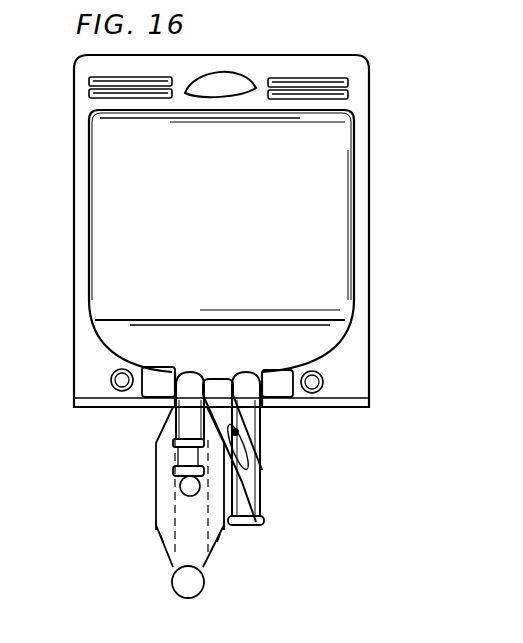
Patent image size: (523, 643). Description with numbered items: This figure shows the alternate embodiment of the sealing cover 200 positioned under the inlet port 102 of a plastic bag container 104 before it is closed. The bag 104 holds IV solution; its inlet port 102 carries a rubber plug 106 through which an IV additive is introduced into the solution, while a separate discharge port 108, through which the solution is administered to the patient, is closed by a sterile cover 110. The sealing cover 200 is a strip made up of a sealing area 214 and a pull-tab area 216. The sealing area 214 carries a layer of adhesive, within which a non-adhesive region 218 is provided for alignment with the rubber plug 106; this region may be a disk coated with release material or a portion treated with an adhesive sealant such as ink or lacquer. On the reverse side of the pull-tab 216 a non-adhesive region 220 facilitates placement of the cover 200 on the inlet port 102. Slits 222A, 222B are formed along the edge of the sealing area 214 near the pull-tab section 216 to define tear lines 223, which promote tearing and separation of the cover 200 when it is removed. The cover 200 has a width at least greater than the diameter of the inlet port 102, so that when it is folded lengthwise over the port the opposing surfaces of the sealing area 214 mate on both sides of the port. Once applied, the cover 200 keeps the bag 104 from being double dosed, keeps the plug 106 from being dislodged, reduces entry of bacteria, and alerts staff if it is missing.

The plastic bag container 104 is at (375, 161).
The inlet port 102 is at (169, 411).
The discharge port 108 is at (262, 413).
The rubber plug 106 is at (262, 461).
The sterile cover 110 is at (262, 500).
The tear lines 223 is at (243, 524).
The sealing cover 200 is at (161, 518).
The sealing area 214 is at (129, 488).
The pull-tab area 216 is at (172, 620).
The non-adhesive region 218 is at (181, 491).
The non-adhesive region 220 is at (198, 590).
The slit 222A is at (168, 561).
The slit 222B is at (168, 551).